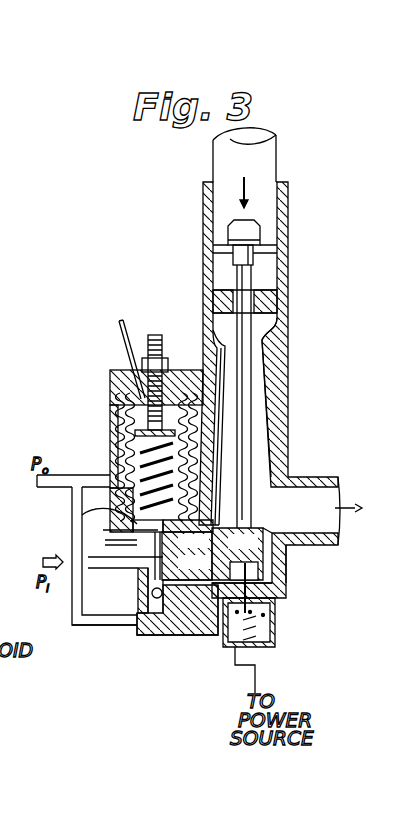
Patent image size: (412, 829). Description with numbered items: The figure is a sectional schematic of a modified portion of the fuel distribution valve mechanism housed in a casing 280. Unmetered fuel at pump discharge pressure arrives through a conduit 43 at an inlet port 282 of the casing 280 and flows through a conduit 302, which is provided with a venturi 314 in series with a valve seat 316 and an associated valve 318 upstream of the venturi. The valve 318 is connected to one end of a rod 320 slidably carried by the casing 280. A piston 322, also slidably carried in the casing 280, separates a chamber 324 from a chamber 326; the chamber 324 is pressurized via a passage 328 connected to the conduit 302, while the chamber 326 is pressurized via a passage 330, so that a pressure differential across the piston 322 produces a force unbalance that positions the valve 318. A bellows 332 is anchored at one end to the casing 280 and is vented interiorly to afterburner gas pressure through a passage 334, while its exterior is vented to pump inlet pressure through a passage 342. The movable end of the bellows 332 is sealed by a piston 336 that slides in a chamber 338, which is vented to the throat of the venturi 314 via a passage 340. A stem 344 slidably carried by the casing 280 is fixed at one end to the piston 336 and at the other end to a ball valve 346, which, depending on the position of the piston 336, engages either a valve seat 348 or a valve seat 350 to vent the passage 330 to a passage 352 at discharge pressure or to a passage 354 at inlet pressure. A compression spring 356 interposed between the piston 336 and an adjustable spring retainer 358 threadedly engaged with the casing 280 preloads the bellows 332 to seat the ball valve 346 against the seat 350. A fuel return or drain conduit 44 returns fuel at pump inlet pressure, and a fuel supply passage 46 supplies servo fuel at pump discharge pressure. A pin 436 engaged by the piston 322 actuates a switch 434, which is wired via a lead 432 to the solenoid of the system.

The conduit 43 is at (278, 150).
The inlet port 282 is at (217, 197).
The valve 318 is at (227, 233).
The valve seat 316 is at (223, 246).
The adjustable spring retainer 358 is at (150, 335).
The passage 340 is at (205, 353).
The venturi 314 is at (280, 350).
The passage 334 is at (112, 338).
The bellows 332 is at (110, 405).
The casing 280 is at (286, 415).
The compression spring 356 is at (119, 430).
The passage 342 is at (110, 468).
The conduit 302 is at (325, 478).
The rod 320 is at (251, 498).
The passage 328 is at (272, 538).
The piston 336 is at (82, 515).
The stem 344 is at (121, 544).
The passage 352 is at (110, 543).
The chamber 338 is at (187, 555).
The valve seat 348 is at (187, 566).
The piston 322 is at (237, 554).
The chamber 324 is at (287, 557).
The chamber 326 is at (266, 582).
The fuel supply passage 46 is at (103, 574).
The ball valve 346 is at (151, 593).
The pin 436 is at (262, 603).
The switch 434 is at (265, 617).
The lead 432 is at (273, 640).
The fuel return or drain conduit 44 is at (113, 625).
The passage 354 is at (150, 637).
The passage 330 is at (192, 637).
The valve seat 350 is at (178, 637).